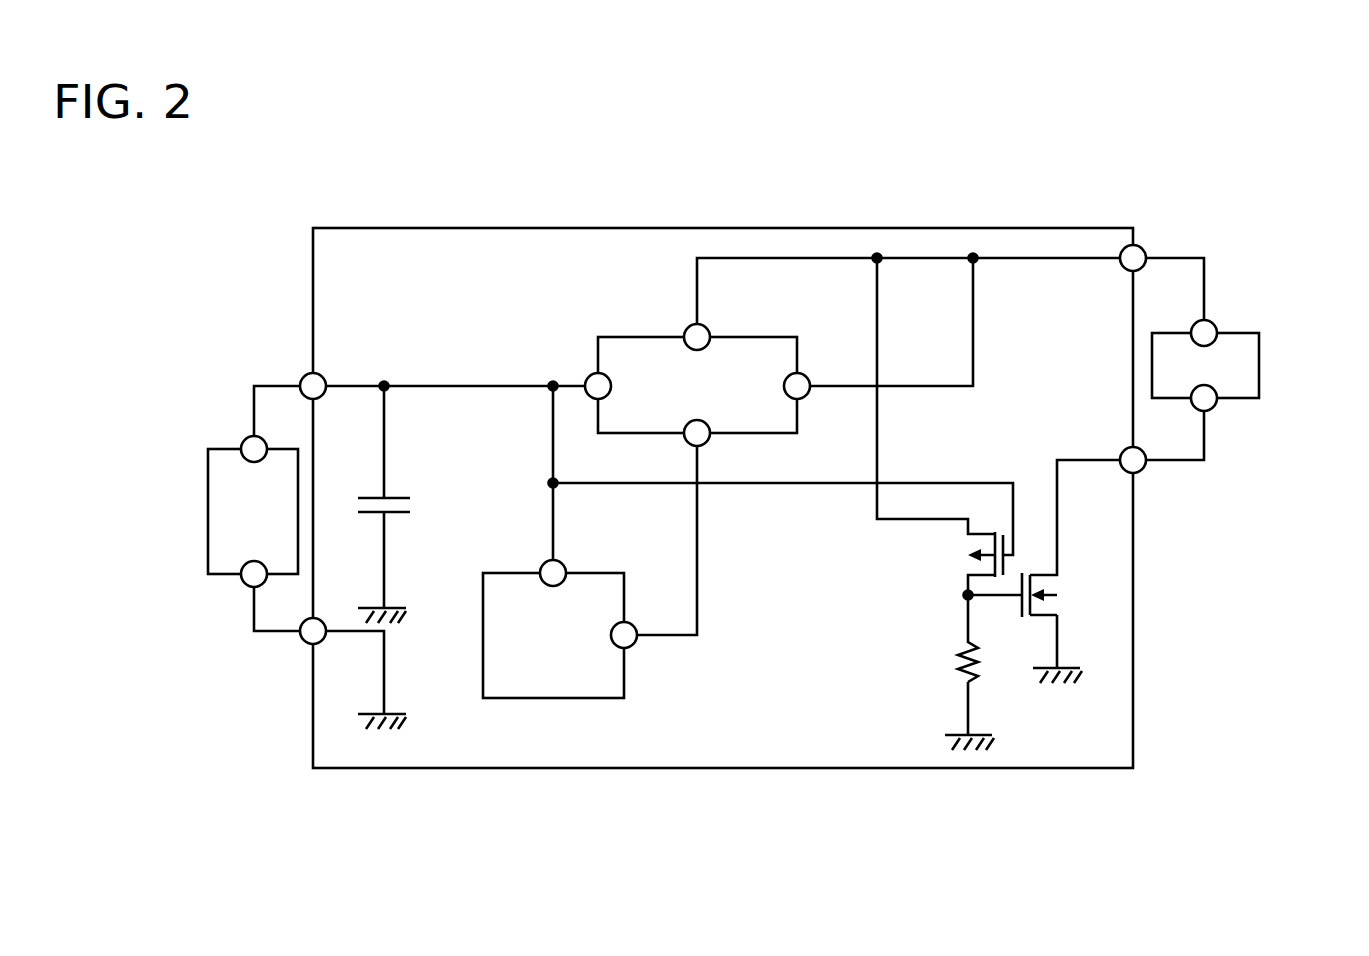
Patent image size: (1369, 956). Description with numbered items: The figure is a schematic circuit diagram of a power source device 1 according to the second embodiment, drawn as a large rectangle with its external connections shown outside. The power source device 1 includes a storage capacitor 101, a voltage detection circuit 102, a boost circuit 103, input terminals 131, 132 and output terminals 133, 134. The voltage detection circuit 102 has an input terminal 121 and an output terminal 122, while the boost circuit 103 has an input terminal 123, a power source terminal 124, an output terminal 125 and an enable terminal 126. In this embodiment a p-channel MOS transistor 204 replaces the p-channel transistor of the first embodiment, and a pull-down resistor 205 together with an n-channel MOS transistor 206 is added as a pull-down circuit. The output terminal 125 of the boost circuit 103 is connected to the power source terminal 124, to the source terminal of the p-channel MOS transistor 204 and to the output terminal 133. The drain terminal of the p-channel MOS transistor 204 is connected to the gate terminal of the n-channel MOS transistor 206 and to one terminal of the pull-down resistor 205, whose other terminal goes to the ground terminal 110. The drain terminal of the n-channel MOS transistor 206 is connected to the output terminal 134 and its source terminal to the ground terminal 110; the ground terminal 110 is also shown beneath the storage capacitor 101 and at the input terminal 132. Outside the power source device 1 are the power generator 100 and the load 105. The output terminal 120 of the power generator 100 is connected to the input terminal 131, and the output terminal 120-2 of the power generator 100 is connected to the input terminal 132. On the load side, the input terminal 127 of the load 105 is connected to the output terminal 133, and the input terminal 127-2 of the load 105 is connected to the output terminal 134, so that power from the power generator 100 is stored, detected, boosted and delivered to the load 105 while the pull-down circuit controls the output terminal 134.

The power source device 1 is at (477, 228).
The power generator 100 is at (208, 508).
The storage capacitor 101 is at (392, 498).
The voltage detection circuit 102 is at (624, 677).
The boost circuit 103 is at (643, 337).
The load 105 is at (1259, 364).
The ground terminal 110 is at (394, 607).
The output terminal of the power generator 120 is at (243, 440).
The output terminal of the power generator 120-2 is at (249, 586).
The input terminal of the voltage detection circuit 121 is at (543, 565).
The output terminal of the voltage detection circuit 122 is at (635, 627).
The input terminal of the boost circuit 123 is at (590, 377).
The power source terminal of the boost circuit 124 is at (706, 328).
The output terminal of the boost circuit 125 is at (806, 378).
The enable terminal of the boost circuit 126 is at (708, 441).
The input terminal of the load 127 is at (1216, 326).
The input terminal of the load 127-2 is at (1215, 408).
The input terminal 131 is at (303, 375).
The input terminal 132 is at (305, 643).
The output terminal 133 is at (1141, 249).
The output terminal 134 is at (1141, 472).
The p-channel MOS transistor 204 is at (962, 541).
The pull-down resistor 205 is at (975, 670).
The n-channel MOS transistor 206 is at (1058, 584).